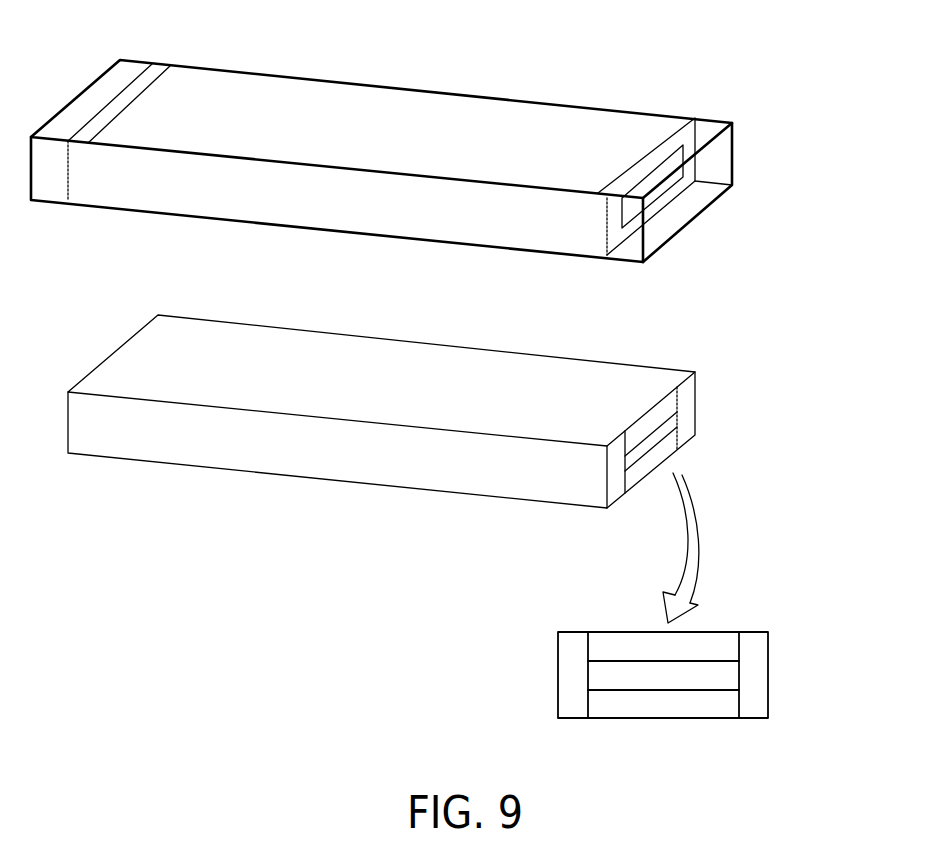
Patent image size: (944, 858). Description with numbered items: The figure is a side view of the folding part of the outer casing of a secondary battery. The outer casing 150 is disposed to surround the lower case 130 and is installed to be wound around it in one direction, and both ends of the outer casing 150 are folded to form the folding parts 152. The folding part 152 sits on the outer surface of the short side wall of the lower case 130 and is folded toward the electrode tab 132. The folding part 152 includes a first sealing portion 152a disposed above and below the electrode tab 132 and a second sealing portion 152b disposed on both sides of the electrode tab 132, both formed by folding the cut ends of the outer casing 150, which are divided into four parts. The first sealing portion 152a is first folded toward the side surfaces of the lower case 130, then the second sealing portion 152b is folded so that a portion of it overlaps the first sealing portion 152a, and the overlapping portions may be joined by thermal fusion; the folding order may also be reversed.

The outer casing 150 is at (411, 284).
The lower case 130 is at (723, 160).
The electrode tab 132 is at (658, 193).
The folding part 152 is at (725, 390).
The first sealing portion 152a is at (702, 135).
The second sealing portion 152b is at (735, 166).